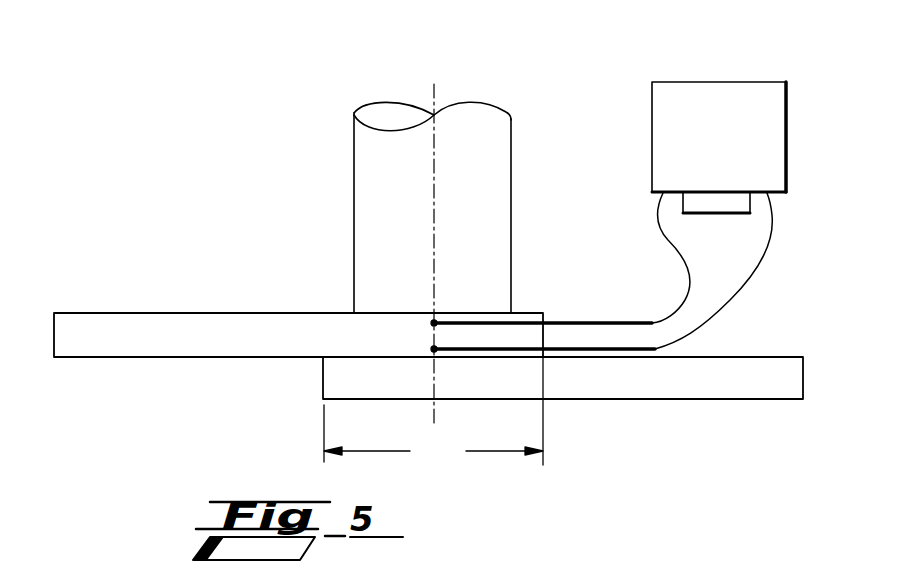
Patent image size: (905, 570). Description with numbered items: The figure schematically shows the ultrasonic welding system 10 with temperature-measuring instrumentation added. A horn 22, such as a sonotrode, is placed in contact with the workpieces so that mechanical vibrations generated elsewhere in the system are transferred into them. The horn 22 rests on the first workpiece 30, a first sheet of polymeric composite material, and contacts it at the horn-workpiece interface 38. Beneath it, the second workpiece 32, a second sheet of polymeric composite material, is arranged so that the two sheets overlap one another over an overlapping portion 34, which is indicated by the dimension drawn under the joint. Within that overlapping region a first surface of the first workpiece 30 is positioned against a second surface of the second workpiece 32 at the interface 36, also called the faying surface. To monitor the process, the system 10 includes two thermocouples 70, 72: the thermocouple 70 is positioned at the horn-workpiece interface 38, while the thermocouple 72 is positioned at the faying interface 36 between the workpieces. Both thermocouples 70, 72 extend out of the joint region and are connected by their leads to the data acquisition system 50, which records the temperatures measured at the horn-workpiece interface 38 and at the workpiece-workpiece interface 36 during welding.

The welding system 10 is at (222, 147).
The horn 22 is at (412, 192).
The first workpiece 30 is at (185, 313).
The second workpiece 32 is at (632, 400).
The overlapping portion 34 is at (433, 412).
The interface 36 is at (500, 358).
The horn-workpiece interface 38 is at (388, 313).
The data acquisition system 50 is at (738, 153).
The thermocouple 70 is at (436, 322).
The thermocouple 72 is at (430, 346).